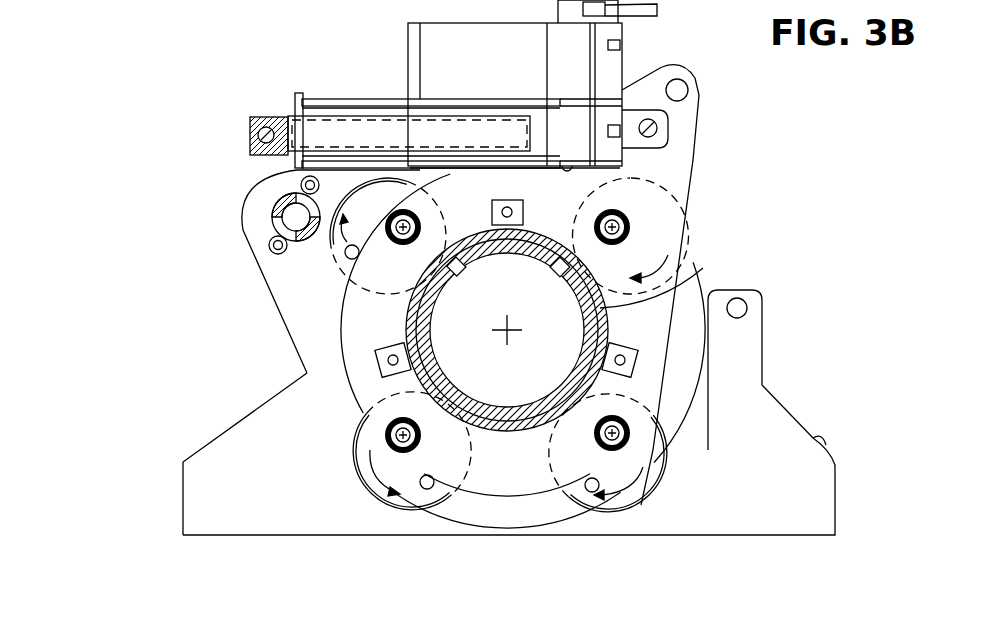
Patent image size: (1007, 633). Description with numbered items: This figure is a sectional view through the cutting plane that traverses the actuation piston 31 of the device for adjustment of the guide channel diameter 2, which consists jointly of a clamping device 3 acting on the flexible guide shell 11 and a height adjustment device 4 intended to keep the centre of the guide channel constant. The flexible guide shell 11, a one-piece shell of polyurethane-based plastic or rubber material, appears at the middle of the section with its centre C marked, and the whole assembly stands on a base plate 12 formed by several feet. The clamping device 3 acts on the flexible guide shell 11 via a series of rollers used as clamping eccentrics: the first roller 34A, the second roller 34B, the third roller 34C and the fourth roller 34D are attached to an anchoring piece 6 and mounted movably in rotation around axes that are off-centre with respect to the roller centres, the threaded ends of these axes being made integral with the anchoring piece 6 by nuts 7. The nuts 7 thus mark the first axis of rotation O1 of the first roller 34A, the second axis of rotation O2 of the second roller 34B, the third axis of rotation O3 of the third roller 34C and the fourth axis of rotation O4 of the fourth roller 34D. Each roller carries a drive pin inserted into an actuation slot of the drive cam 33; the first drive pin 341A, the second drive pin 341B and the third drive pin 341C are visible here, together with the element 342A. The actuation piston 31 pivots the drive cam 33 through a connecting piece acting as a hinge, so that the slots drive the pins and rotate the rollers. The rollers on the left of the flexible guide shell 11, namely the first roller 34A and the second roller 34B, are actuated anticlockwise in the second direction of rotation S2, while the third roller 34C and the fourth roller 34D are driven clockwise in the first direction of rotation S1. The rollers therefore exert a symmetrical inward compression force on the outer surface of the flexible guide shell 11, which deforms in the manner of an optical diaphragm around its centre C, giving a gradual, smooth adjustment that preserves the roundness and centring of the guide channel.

The device for adjustment of the guide channel diameter 2 is at (362, 85).
The clamping device 3 is at (454, 84).
The height adjustment device 4 is at (454, 84).
The anchoring piece 6 is at (688, 115).
The nuts 7 is at (422, 228).
The flexible guide shell 11 is at (703, 272).
The base plate 12 is at (805, 510).
The actuation piston 31 is at (405, 109).
The drive cam 33 is at (250, 218).
The first roller 34A is at (330, 247).
The second roller 34B is at (393, 500).
The third roller 34C is at (665, 452).
The fourth roller 34D is at (690, 192).
The first drive pin 341A is at (346, 262).
The second drive pin 341B is at (428, 490).
The third drive pin 341C is at (590, 493).
The pin 342A is at (153, 626).
The first axis of rotation O1 is at (418, 210).
The second axis of rotation O2 is at (393, 422).
The third axis of rotation O3 is at (596, 442).
The fourth axis of rotation O4 is at (603, 207).
The first direction of rotation S1 is at (631, 366).
The second direction of rotation S2 is at (372, 345).
The centre C is at (512, 319).